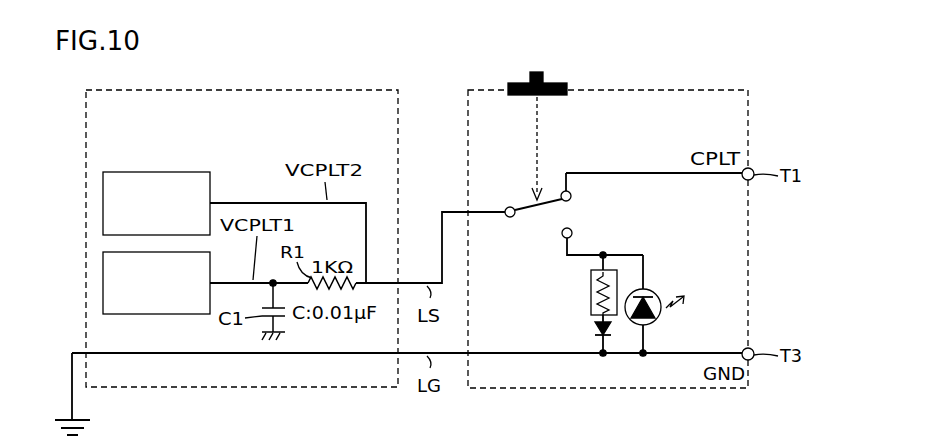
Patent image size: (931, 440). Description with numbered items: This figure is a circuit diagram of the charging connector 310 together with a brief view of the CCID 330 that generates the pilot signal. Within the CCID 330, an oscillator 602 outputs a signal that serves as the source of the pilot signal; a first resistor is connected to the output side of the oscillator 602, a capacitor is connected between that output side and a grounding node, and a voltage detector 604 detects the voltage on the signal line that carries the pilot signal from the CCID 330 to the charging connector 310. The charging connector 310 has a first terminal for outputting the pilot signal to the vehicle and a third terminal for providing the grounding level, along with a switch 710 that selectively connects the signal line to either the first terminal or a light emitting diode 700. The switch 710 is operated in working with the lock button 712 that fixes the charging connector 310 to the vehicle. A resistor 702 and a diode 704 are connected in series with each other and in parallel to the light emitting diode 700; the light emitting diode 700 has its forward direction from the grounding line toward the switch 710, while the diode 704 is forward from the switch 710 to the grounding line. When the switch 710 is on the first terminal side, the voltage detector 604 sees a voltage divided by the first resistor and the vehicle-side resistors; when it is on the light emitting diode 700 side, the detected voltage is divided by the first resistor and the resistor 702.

The CCID 330 is at (370, 89).
The charging connector 310 is at (718, 89).
The voltage detector 604 is at (195, 170).
The oscillator 602 is at (103, 283).
The lock button 712 is at (556, 84).
The switch 710 is at (541, 224).
The light emitting diode 700 is at (655, 292).
The resistor 702 is at (590, 292).
The diode 704 is at (596, 328).